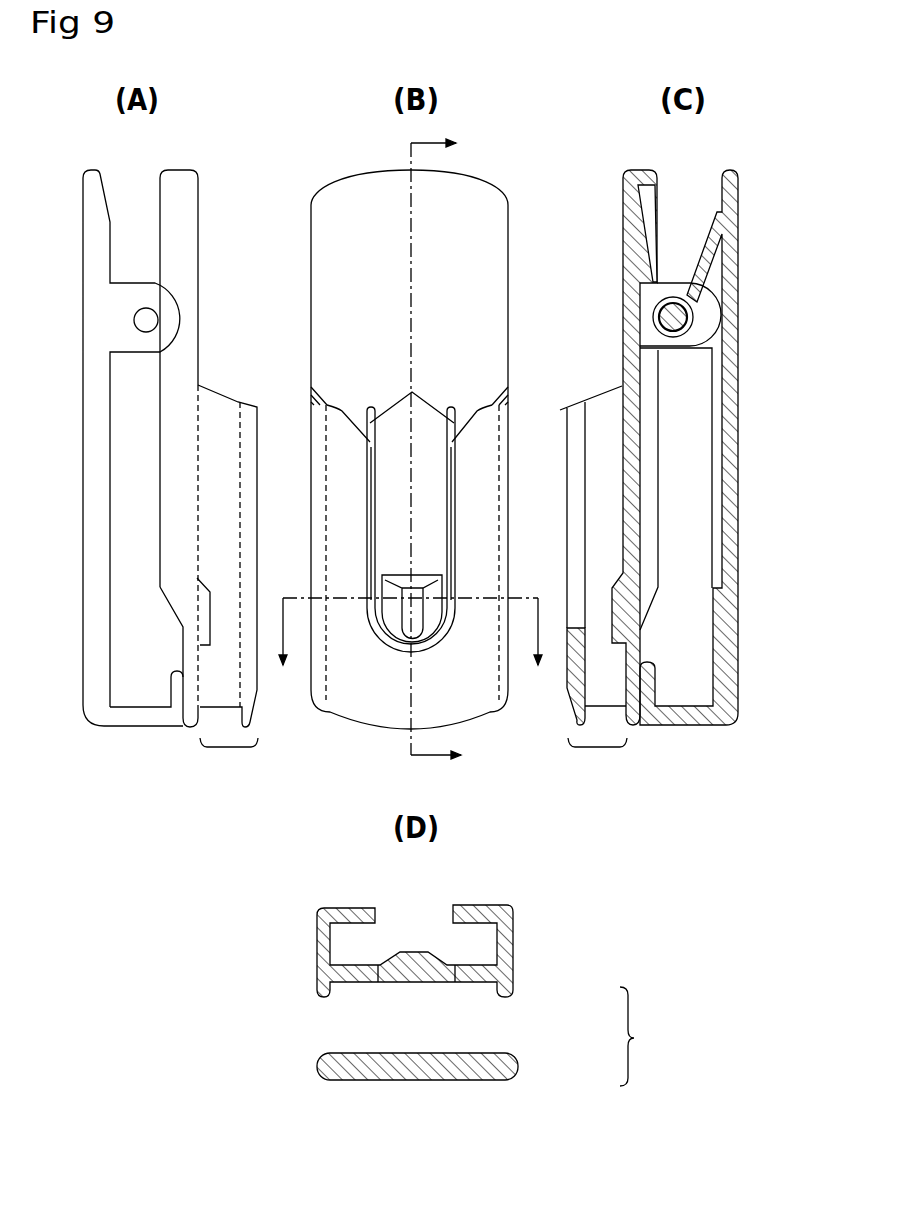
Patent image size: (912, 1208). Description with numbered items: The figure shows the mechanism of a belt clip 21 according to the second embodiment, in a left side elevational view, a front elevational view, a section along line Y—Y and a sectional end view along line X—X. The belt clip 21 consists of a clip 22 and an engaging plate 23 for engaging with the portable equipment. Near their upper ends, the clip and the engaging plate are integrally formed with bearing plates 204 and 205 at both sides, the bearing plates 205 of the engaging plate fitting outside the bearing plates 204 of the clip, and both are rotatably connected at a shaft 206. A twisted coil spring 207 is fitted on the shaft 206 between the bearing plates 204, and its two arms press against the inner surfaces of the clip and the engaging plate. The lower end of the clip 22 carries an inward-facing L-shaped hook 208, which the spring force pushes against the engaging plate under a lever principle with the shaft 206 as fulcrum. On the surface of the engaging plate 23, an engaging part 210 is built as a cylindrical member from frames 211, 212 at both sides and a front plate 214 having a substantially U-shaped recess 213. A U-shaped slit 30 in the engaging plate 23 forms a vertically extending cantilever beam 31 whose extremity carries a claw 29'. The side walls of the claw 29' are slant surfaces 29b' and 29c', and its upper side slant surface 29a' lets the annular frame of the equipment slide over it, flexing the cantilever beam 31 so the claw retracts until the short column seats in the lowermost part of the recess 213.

The belt clip 21 is at (140, 200).
The clip 22 is at (100, 697).
The engaging plate 23 is at (180, 233).
The claw 29' is at (495, 734).
The upper side slant surface 29a' is at (500, 560).
The slant surface 29b' is at (324, 786).
The slant surface 29c' is at (507, 784).
The U-shaped slit 30 is at (413, 392).
The cantilever beam 31 is at (392, 498).
The bearing plate 204 is at (130, 332).
The bearing plate 205 is at (153, 285).
The shaft 206 is at (148, 320).
The twisted coil spring 207 is at (660, 293).
The L-shaped hook 208 is at (148, 718).
The engaging part 210 is at (233, 748).
The frame 211 is at (325, 388).
The frame 212 is at (502, 390).
The U-shaped recess 213 is at (402, 480).
The front plate 214 is at (375, 690).